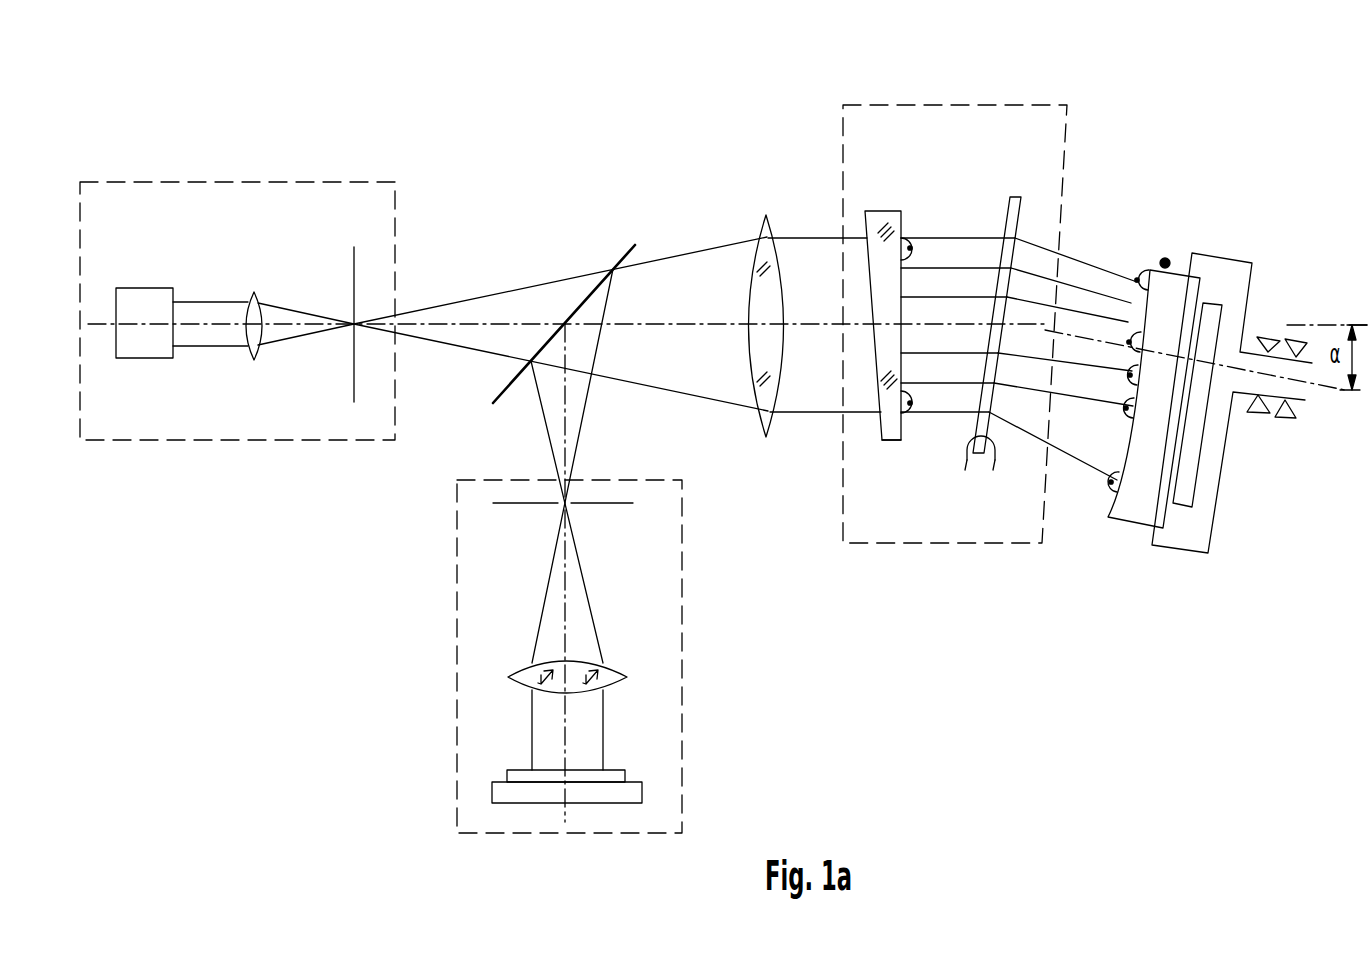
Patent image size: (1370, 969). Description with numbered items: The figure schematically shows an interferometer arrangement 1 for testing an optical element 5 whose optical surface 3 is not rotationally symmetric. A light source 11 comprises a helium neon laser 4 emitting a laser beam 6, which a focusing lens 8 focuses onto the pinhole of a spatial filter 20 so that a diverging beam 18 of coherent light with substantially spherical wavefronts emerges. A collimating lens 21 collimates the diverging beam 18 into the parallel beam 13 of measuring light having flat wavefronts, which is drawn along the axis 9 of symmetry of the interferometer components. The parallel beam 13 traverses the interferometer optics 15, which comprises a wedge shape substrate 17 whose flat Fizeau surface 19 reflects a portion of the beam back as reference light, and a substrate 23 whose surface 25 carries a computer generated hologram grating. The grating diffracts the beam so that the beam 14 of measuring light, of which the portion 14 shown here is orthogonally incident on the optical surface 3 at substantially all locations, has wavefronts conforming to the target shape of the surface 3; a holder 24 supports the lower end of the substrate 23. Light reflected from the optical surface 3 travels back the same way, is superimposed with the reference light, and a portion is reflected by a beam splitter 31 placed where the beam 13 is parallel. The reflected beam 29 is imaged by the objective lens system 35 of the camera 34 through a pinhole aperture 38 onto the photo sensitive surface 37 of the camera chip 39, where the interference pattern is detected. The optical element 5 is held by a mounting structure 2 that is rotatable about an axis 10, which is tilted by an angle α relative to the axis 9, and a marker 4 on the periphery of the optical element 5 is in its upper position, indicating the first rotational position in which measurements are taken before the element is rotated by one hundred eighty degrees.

The interferometer arrangement 1 is at (563, 124).
The mounting structure 2 is at (1212, 532).
The optical surface 3 is at (1106, 507).
The helium neon laser / marker 4 is at (141, 288).
The optical element 5 is at (1133, 528).
The laser beam 6 is at (206, 302).
The focusing lens 8 is at (254, 292).
The axis of symmetry 9 is at (714, 330).
The axis of rotation 10 is at (1341, 393).
The light source 11 is at (218, 180).
The parallel beam of measuring light 13 is at (815, 238).
The beam of measuring light 14 is at (1080, 262).
The interferometer optics 15 is at (955, 103).
The wedge shape substrate 17 is at (882, 210).
The diverging beam 18 is at (497, 292).
The Fizeau surface 19 is at (903, 428).
The spatial filter 20 is at (350, 270).
The collimating lens 21 is at (760, 232).
The substrate 23 is at (1016, 197).
The holder 24 is at (967, 458).
The grating surface 25 is at (994, 458).
The reflected beam 29 is at (580, 433).
The beam splitter 31 is at (633, 243).
The camera 34 is at (455, 601).
The objective lens system 35 is at (612, 665).
The photo sensitive surface 37 is at (612, 770).
The pinhole aperture 38 is at (518, 505).
The camera chip 39 is at (634, 782).